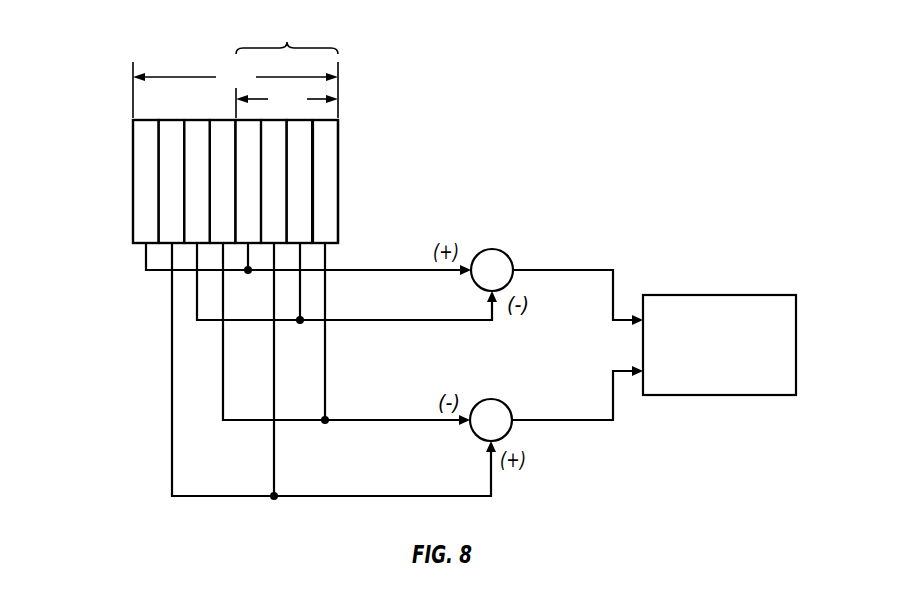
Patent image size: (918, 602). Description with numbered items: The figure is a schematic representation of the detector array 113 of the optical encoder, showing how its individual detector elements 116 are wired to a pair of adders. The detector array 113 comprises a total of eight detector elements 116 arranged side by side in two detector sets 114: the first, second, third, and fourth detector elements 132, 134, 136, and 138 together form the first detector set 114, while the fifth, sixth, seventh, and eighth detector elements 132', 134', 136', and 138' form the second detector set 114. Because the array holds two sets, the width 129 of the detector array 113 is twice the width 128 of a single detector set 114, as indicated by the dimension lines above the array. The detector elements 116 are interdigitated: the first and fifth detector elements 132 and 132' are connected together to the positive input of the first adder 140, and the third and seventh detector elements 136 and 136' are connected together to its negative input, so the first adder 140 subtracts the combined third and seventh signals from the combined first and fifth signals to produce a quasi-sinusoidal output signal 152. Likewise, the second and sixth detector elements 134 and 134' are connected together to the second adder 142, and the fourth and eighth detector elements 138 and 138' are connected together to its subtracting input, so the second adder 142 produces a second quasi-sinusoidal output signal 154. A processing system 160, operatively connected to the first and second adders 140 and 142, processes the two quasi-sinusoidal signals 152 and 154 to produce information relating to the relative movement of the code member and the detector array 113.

The detector array 113 is at (363, 109).
The detector set 114 is at (287, 33).
The detector elements 116 is at (325, 164).
The width of the detector set 128 is at (287, 102).
The width of the detector array 129 is at (235, 90).
The first detector element 132 is at (107, 181).
The second detector element 134 is at (119, 181).
The third detector element 136 is at (132, 181).
The fourth detector element 138 is at (145, 182).
The fifth detector element 132' is at (324, 180).
The sixth detector element 134' is at (337, 181).
The seventh detector element 136' is at (350, 181).
The eighth detector element 138' is at (362, 184).
The first adder 140 is at (496, 243).
The second adder 142 is at (496, 393).
The quasi-sinusoidal output signal 152 is at (588, 269).
The quasi-sinusoidal output signal 154 is at (588, 421).
The processing system 160 is at (727, 295).